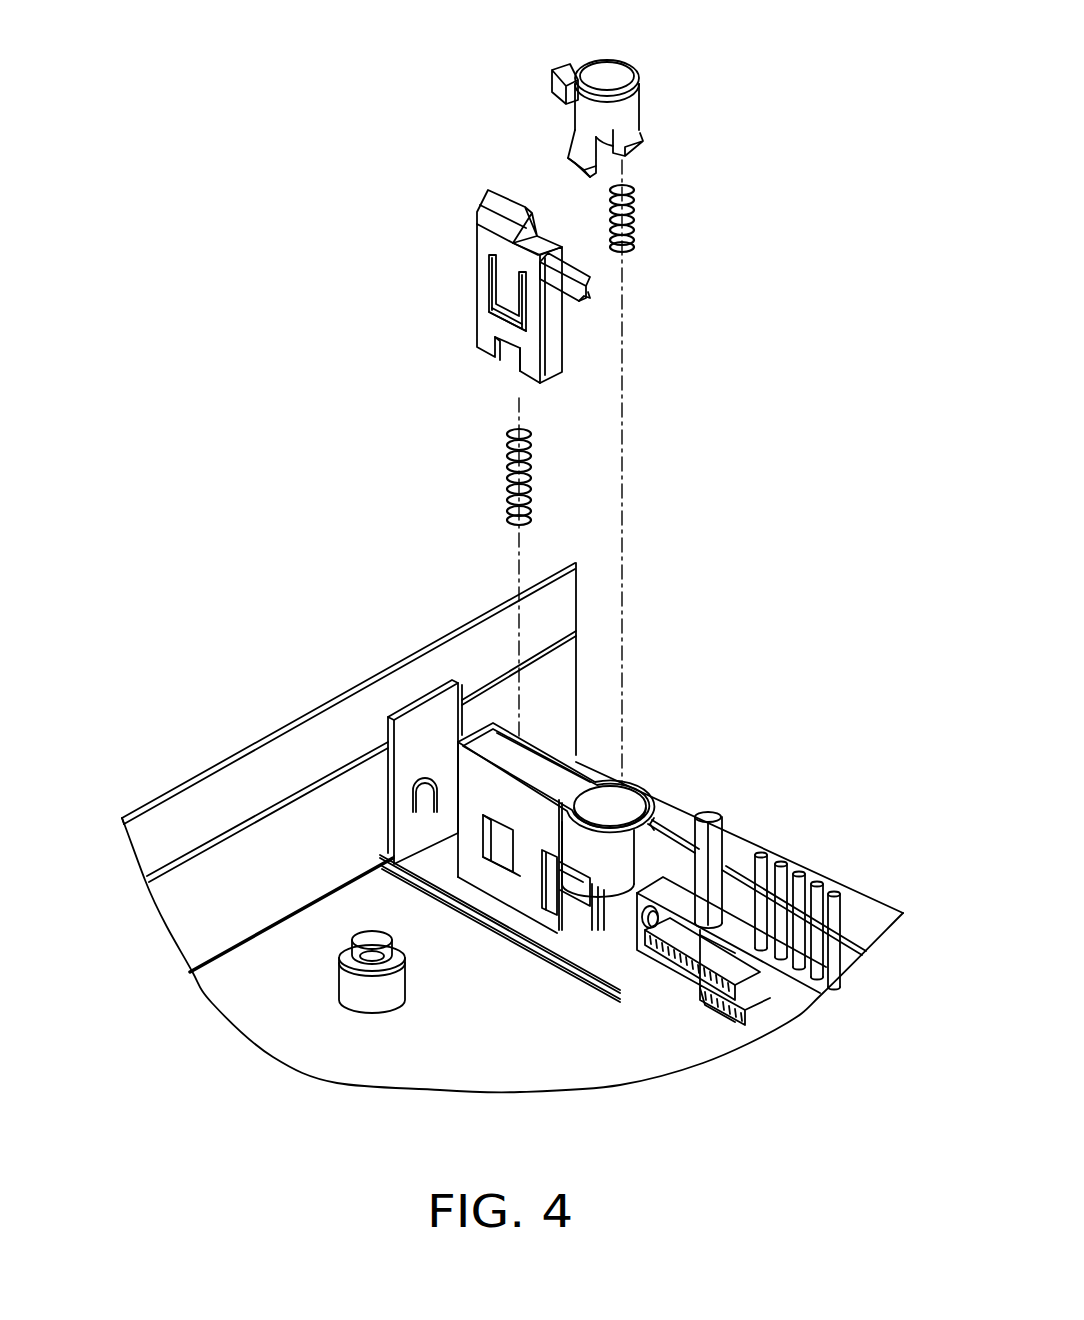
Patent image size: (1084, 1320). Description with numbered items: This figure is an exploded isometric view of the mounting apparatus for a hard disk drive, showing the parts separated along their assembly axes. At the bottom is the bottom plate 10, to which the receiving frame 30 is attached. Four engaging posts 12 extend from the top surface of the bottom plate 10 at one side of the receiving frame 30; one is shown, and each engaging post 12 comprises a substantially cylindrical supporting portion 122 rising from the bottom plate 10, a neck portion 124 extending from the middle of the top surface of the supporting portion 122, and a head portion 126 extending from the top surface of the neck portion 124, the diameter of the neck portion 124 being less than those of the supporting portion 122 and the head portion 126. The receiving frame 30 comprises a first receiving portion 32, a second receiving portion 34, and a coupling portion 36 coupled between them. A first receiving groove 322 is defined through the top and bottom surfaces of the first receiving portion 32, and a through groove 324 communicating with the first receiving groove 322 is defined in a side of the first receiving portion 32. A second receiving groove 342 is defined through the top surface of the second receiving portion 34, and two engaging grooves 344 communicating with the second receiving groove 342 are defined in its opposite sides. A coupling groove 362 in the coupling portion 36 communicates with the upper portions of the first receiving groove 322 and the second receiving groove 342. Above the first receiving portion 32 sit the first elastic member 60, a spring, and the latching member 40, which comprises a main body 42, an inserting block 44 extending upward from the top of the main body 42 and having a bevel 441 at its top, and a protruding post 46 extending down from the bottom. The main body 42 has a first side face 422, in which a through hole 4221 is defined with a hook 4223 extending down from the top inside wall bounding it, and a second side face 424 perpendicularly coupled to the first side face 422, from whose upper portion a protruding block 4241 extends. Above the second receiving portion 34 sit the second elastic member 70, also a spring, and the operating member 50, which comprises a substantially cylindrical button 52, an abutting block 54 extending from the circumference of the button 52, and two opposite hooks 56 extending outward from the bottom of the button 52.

The bottom plate 10 is at (657, 1057).
The engaging post 12 is at (276, 1042).
The supporting portion 122 is at (347, 980).
The neck portion 124 is at (380, 943).
The head portion 126 is at (378, 962).
The receiving frame 30 is at (733, 897).
The first receiving portion 32 is at (442, 776).
The first receiving groove 322 is at (505, 748).
The through groove 324 is at (500, 840).
The second receiving portion 34 is at (607, 867).
The second receiving groove 342 is at (637, 808).
The engaging groove 344 is at (573, 877).
The coupling portion 36 is at (579, 921).
The coupling groove 362 is at (580, 792).
The latching member 40 is at (487, 282).
The main body 42 is at (466, 275).
The first side face 422 is at (448, 315).
The through hole 4221 is at (490, 268).
The hook 4223 is at (508, 292).
The second side face 424 is at (572, 308).
The protruding block 4241 is at (567, 287).
The inserting block 44 is at (469, 190).
The bevel 441 is at (498, 195).
The protruding post 46 is at (513, 353).
The operating member 50 is at (612, 106).
The button 52 is at (628, 105).
The abutting block 54 is at (573, 72).
The hook 56 is at (585, 148).
The first elastic member 60 is at (507, 483).
The second elastic member 70 is at (632, 212).